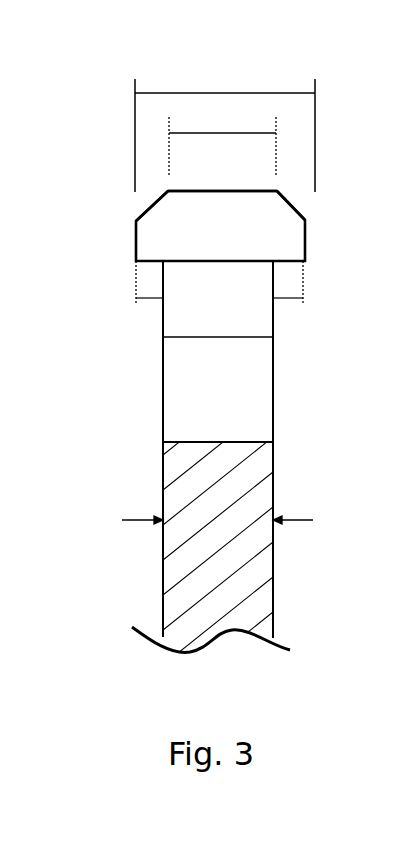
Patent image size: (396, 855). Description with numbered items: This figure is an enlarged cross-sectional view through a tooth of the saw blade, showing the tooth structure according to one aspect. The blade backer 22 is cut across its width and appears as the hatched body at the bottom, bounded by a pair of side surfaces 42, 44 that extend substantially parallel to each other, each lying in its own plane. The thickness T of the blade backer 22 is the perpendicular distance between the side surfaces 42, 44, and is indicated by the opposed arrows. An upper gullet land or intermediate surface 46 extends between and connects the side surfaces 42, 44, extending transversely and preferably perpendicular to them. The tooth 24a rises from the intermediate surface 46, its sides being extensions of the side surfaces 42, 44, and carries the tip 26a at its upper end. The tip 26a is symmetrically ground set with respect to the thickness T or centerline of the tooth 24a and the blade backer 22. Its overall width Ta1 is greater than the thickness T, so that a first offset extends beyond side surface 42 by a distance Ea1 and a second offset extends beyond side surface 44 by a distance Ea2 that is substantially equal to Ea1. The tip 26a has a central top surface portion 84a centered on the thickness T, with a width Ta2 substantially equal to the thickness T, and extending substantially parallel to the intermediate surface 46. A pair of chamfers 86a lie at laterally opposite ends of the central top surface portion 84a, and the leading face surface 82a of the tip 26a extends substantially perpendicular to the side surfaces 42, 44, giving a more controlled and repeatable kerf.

The overall width or thickness of the tip Ta1 is at (225, 93).
The width or thickness of the central top surface portion Ta2 is at (193, 134).
The tip 26a is at (136, 230).
The leading face surface 82a is at (192, 224).
The central top surface portion 84a is at (260, 190).
The chamfers 86a is at (306, 215).
The first offset distance Ea1 is at (148, 302).
The second offset distance Ea2 is at (290, 302).
The tooth 24a is at (185, 385).
The intermediate surface 46 is at (243, 441).
The side surface 42 is at (163, 475).
The side surface 44 is at (273, 468).
The thickness T is at (207, 521).
The blade backer 22 is at (238, 588).